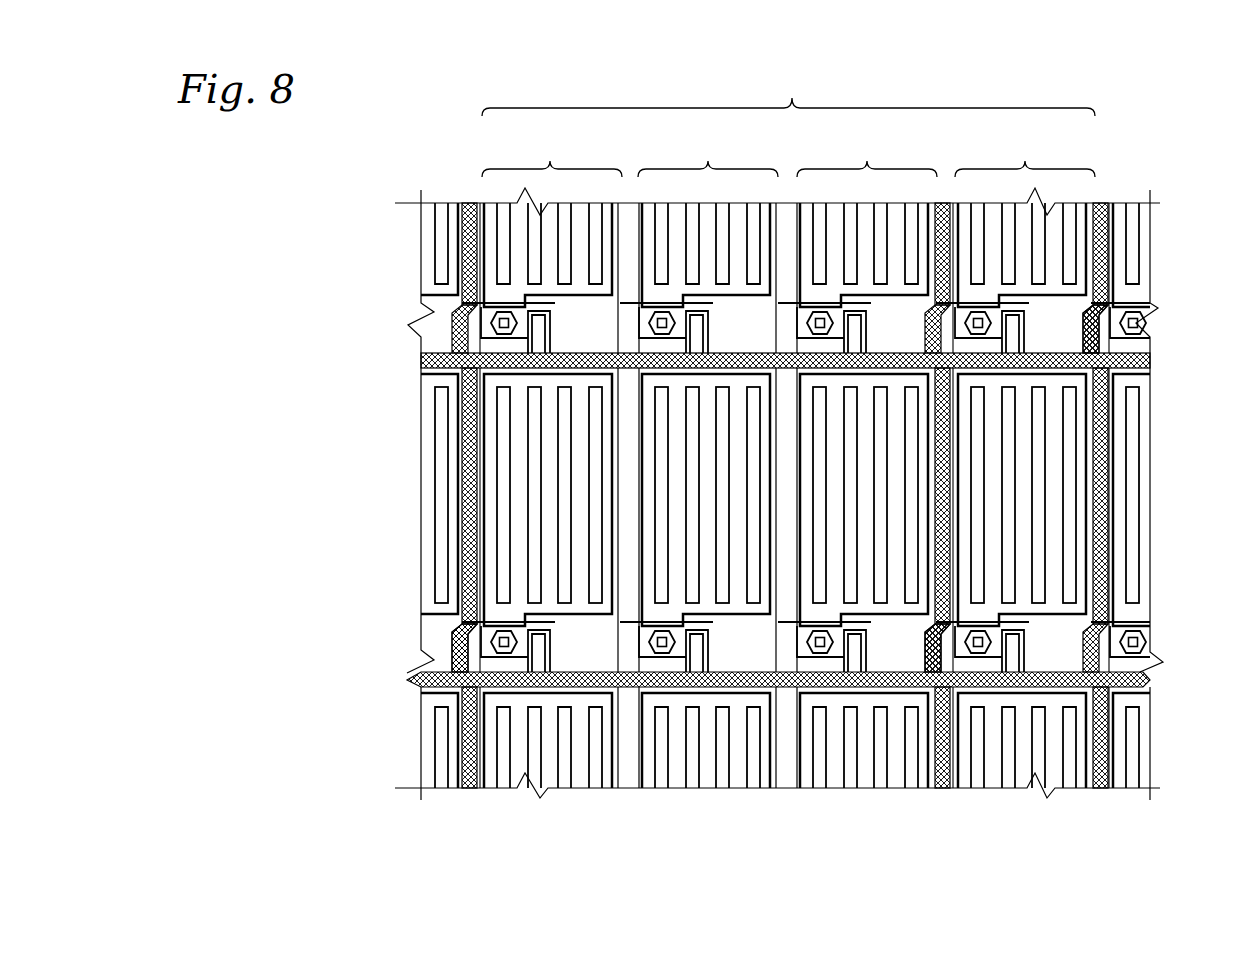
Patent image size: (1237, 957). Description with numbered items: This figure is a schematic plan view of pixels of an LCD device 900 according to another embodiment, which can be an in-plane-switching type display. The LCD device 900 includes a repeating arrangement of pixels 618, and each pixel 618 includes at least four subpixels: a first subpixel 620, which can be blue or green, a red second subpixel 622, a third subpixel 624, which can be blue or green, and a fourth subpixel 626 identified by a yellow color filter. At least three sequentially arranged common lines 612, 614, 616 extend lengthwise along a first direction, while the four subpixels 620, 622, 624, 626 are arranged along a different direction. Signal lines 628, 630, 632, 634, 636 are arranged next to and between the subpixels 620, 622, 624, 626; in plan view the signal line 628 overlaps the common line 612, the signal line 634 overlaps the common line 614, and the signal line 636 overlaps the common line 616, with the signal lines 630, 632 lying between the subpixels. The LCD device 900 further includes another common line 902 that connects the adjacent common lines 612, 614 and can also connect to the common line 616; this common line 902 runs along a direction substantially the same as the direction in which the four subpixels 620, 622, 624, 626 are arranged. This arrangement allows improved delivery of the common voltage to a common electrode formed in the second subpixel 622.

The LCD device 900 is at (348, 206).
The another common line 902 is at (1150, 360).
The common line 612 is at (470, 790).
The common line 614 is at (942, 790).
The common line 616 is at (1100, 790).
The pixel 618 is at (792, 100).
The first subpixel 620 is at (550, 162).
The second subpixel 622 is at (708, 162).
The third subpixel 624 is at (867, 162).
The fourth subpixel 626 is at (1025, 162).
The signal line 628 is at (462, 642).
The signal line 630 is at (625, 780).
The signal line 632 is at (790, 778).
The signal line 634 is at (943, 652).
The signal line 636 is at (1102, 331).